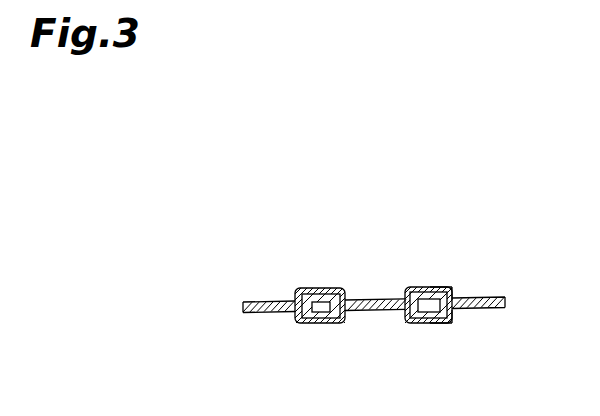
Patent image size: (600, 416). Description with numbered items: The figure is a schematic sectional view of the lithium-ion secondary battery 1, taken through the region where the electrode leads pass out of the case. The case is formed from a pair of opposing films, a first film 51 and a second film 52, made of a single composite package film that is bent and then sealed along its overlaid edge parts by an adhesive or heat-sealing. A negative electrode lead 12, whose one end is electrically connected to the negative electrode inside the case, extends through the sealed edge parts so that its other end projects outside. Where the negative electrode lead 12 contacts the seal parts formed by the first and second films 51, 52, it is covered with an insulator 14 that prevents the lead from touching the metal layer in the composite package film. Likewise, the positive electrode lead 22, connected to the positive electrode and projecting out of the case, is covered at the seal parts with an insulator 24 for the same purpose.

The lithium-ion secondary battery 1 is at (492, 173).
The negative electrode lead 12 is at (327, 326).
The insulator 14 is at (318, 324).
The positive electrode lead 22 is at (413, 323).
The insulator 24 is at (426, 323).
The first film 51 is at (450, 297).
The second film 52 is at (448, 322).